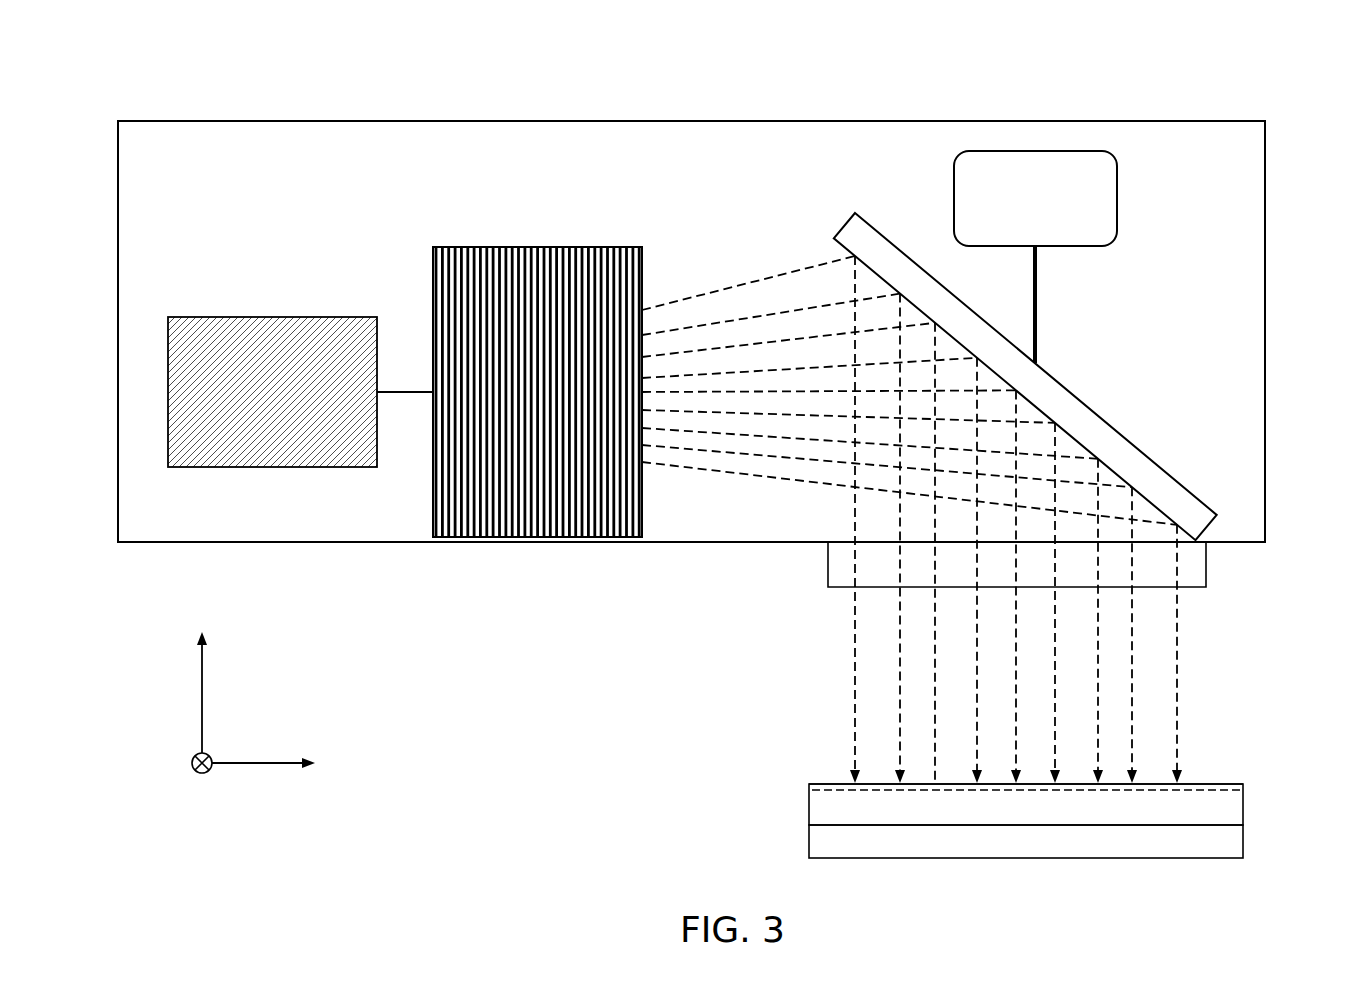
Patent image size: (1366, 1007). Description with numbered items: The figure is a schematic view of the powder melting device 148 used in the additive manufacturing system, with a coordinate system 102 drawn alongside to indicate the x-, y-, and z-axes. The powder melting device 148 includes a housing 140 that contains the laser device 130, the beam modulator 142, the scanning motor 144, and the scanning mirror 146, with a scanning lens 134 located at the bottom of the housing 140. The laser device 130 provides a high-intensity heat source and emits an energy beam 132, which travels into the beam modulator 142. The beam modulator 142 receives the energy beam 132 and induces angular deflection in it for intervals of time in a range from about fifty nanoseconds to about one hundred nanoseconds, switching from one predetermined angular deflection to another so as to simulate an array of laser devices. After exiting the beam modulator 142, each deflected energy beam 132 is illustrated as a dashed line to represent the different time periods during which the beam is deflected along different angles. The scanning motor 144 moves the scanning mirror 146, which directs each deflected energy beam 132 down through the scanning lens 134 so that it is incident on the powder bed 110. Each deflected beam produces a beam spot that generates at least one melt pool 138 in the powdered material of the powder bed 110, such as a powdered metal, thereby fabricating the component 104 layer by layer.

The coordinate system 102 is at (268, 670).
The component 104 is at (809, 810).
The powder bed 110 is at (809, 845).
The laser device 130 is at (277, 317).
The energy beam 132 is at (401, 393).
The scanning lens 134 is at (828, 568).
The melt pool 138 is at (832, 784).
The housing 140 is at (1265, 318).
The beam modulator 142 is at (542, 543).
The scanning motor 144 is at (1117, 192).
The scanning mirror 146 is at (1167, 468).
The powder melting device 148 is at (1192, 85).